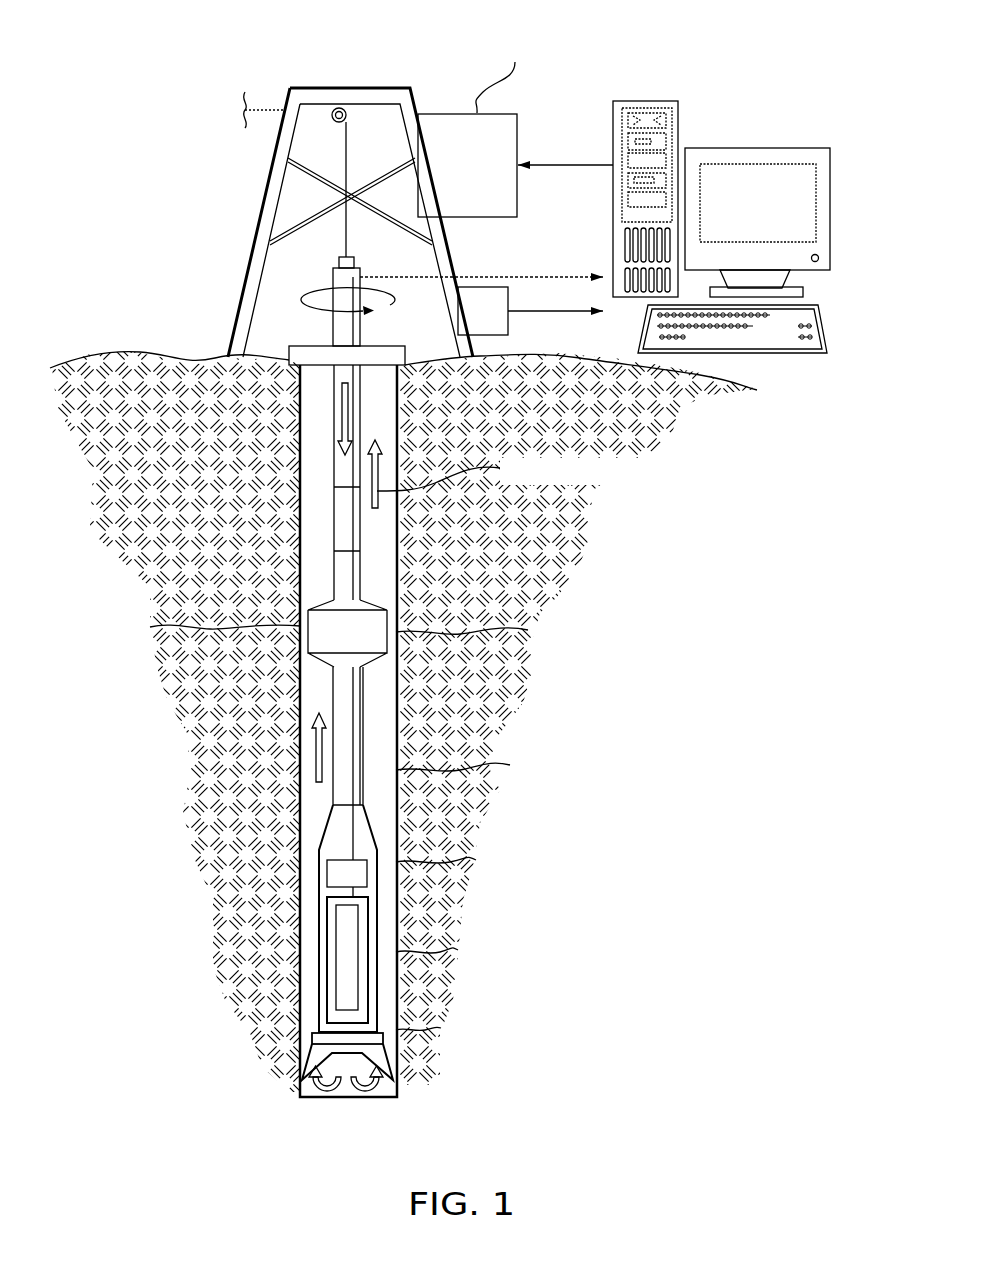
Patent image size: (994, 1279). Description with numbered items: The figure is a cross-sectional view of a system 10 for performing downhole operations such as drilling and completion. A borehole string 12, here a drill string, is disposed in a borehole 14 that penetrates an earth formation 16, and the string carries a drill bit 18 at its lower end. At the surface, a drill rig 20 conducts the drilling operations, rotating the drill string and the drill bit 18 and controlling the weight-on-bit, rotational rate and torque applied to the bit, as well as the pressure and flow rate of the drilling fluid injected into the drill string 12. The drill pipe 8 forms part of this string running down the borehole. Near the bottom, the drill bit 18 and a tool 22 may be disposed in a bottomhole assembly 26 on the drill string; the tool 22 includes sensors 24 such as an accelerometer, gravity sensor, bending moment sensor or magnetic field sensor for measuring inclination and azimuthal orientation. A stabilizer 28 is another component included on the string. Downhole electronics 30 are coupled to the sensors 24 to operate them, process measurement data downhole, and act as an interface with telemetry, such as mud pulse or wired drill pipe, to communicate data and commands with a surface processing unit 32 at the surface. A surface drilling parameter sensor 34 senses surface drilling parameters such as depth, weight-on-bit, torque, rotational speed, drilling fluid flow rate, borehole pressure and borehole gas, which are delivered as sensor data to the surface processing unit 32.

The system 10 is at (83, 56).
The drill rig 20 is at (182, 247).
The surface processing unit 32 is at (648, 102).
The surface drilling parameter sensor 34 is at (508, 322).
The borehole 14 is at (317, 397).
The earth formation 16 is at (566, 415).
The borehole string 12 is at (285, 731).
The drill pipe 8 is at (333, 564).
The stabilizer 28 is at (368, 655).
The downhole electronics 30 is at (335, 872).
The sensors 24 is at (347, 913).
The tool 22 is at (351, 918).
The bottomhole assembly 26 is at (316, 989).
The drill bit 18 is at (317, 1050).